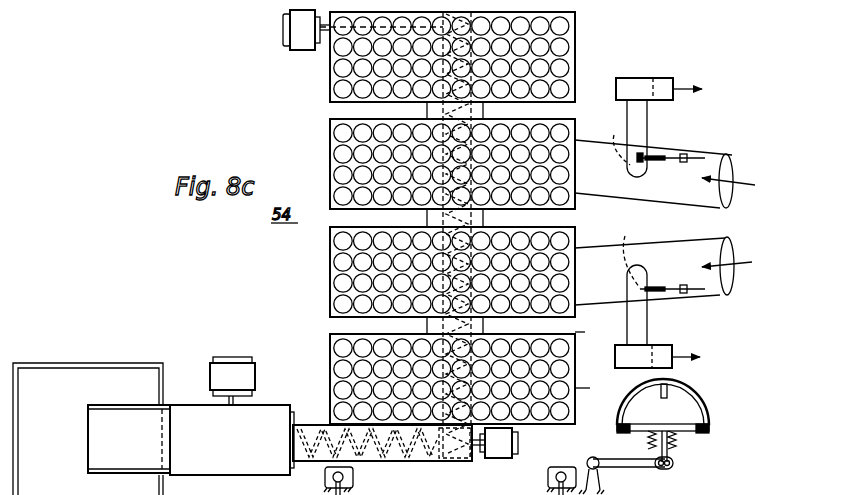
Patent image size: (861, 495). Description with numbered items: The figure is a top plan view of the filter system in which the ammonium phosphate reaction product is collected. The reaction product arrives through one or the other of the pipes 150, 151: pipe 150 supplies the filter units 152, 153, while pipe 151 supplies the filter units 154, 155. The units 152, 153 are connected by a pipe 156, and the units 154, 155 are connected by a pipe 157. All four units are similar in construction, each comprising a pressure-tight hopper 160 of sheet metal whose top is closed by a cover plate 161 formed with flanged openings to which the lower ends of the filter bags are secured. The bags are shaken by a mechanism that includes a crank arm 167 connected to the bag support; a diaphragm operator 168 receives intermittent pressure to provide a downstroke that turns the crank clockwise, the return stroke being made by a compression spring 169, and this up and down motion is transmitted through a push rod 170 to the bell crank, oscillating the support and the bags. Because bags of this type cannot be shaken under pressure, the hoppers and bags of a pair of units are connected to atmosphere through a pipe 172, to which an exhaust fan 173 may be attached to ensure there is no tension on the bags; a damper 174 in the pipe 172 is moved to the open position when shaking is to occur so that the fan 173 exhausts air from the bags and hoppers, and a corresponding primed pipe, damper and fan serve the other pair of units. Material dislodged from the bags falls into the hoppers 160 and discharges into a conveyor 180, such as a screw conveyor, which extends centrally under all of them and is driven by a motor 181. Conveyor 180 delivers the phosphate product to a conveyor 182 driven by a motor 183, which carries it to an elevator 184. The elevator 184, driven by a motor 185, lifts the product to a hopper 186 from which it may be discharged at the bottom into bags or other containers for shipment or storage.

The pipe 150 is at (709, 296).
The pipe 151 is at (713, 153).
The filter unit 152 is at (330, 262).
The filter unit 153 is at (330, 345).
The filter unit 154 is at (330, 153).
The filter unit 155 is at (330, 75).
The pipe 156 is at (484, 327).
The pipe 157 is at (484, 112).
The hopper 160 is at (597, 388).
The cover plate 161 is at (560, 332).
The crank arm 167 is at (629, 468).
The diaphragm operator 168 is at (668, 390).
The compression spring 169 is at (676, 440).
The push rod 170 is at (650, 440).
The pipe 172 is at (658, 232).
The exhaust fan 173 is at (617, 88).
The damper 174 is at (613, 202).
The conveyor 180 is at (427, 107).
The motor 181 is at (300, 30).
The conveyor 182 is at (382, 454).
The motor 183 is at (505, 462).
The elevator 184 is at (233, 445).
The motor 185 is at (240, 347).
The hopper 186 is at (113, 350).